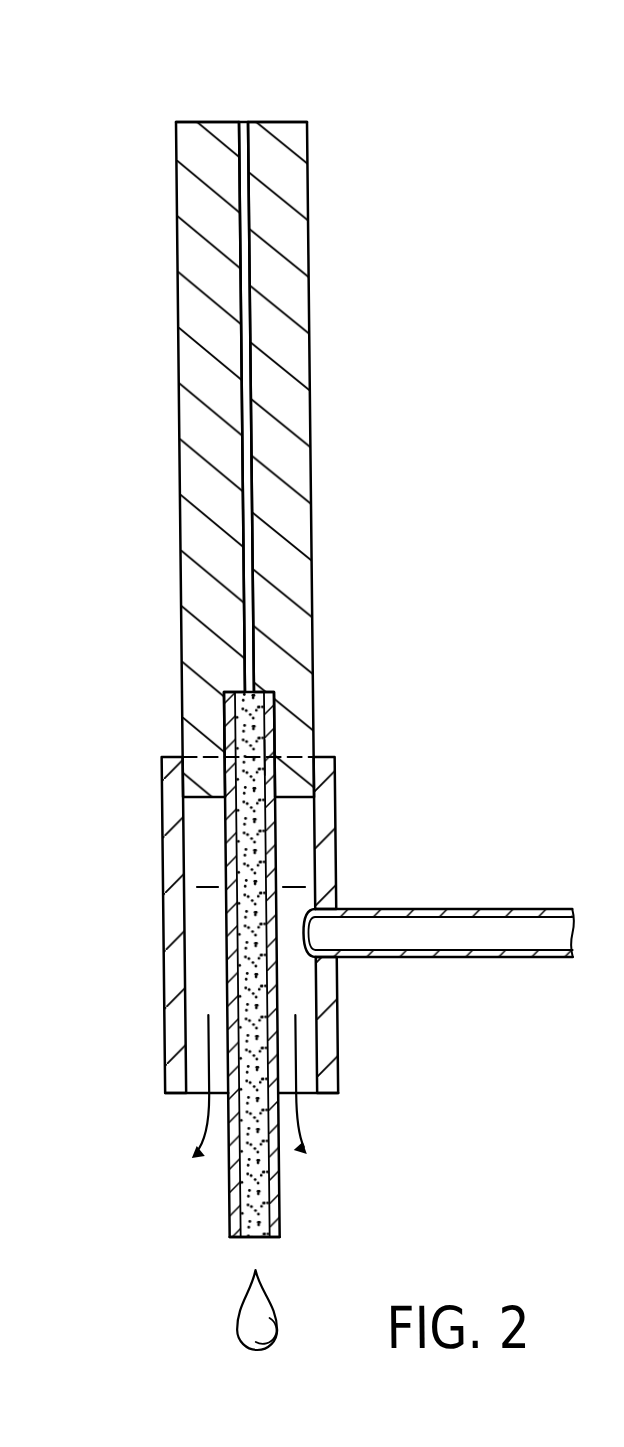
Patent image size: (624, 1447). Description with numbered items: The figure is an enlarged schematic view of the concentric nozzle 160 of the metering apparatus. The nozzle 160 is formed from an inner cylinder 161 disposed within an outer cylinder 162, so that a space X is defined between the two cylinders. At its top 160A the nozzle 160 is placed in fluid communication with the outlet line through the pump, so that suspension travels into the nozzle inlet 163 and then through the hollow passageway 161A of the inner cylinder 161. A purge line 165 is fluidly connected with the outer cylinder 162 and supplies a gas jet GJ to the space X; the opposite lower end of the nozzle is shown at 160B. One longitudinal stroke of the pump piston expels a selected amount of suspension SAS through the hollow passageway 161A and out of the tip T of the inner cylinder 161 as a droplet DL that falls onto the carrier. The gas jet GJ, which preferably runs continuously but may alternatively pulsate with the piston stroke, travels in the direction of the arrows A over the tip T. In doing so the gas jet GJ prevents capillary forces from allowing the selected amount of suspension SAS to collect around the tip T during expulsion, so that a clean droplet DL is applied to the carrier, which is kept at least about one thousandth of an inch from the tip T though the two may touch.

The nozzle 160 is at (139, 50).
The top of nozzle 160A is at (183, 122).
The lower outlet end of housing 160B is at (321, 1093).
The inner cylinder 161 is at (268, 700).
The hollow passageway 161A is at (262, 765).
The outer cylinder 162 is at (176, 826).
The nozzle inlet 163 is at (245, 122).
The purge line 165 is at (507, 907).
The selected amount of suspension SAS is at (238, 912).
The gas jet GJ is at (463, 940).
The space X is at (251, 864).
The arrows A is at (306, 1162).
The tip T is at (233, 1238).
The droplet DL is at (264, 1323).